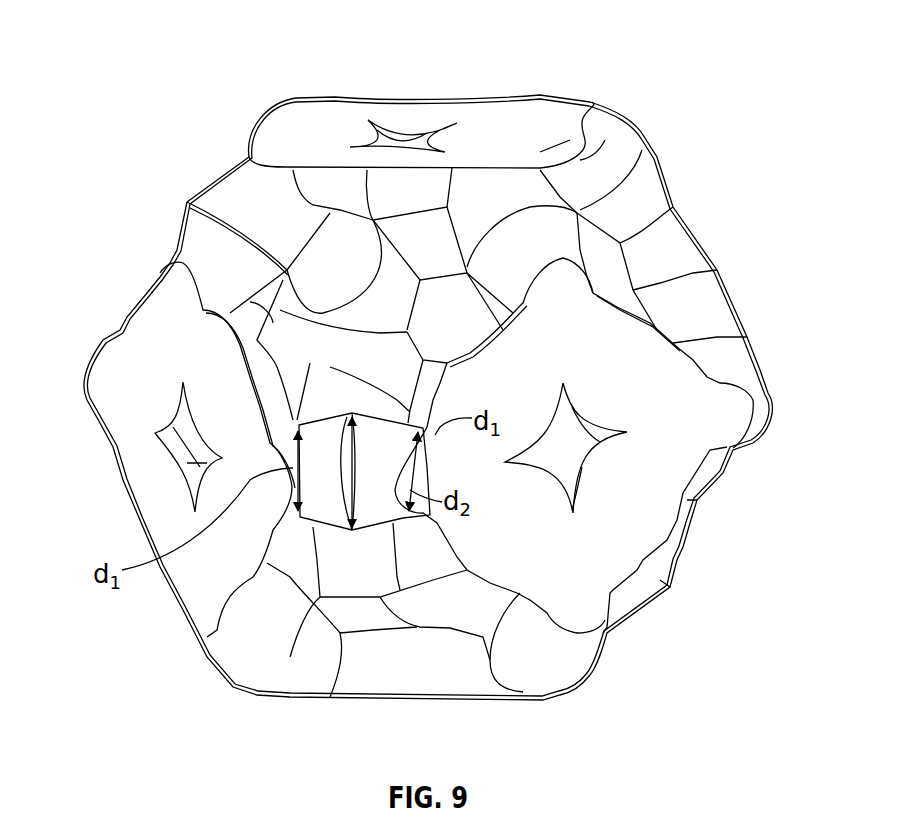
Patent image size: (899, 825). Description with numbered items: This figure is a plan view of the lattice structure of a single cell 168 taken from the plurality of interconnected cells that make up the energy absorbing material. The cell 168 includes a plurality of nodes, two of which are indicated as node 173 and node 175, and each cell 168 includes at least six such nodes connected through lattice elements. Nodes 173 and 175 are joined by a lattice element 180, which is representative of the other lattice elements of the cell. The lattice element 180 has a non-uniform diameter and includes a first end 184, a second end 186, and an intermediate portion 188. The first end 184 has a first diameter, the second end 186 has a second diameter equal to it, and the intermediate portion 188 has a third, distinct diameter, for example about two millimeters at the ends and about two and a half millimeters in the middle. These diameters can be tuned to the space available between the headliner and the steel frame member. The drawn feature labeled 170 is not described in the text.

The cell 168 is at (208, 62).
The top cap face 170 is at (380, 94).
The node 173 is at (118, 420).
The node 175 is at (653, 520).
The lattice element 180 is at (401, 536).
The first end 184 is at (290, 448).
The second end 186 is at (388, 450).
The intermediate portion 188 is at (373, 518).